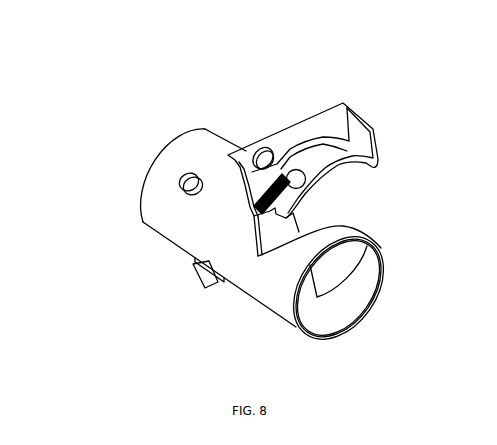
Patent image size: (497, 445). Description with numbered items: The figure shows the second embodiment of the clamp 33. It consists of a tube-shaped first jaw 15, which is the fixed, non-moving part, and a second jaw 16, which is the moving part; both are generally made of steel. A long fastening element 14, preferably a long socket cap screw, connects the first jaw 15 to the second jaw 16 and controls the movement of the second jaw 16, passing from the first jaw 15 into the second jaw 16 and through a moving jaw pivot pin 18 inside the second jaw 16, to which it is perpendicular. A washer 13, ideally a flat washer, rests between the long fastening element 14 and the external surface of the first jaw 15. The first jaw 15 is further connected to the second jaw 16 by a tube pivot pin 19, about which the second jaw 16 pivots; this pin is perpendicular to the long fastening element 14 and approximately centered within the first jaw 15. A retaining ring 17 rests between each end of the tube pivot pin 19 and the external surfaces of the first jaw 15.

The washer 13 is at (198, 262).
The long fastening element 14 is at (192, 285).
The first jaw 15 is at (162, 140).
The second jaw 16 is at (322, 112).
The retaining ring 17 is at (180, 194).
The moving jaw pivot pin 18 is at (262, 150).
The tube pivot pin 19 is at (180, 174).
The clamp 33 is at (377, 218).